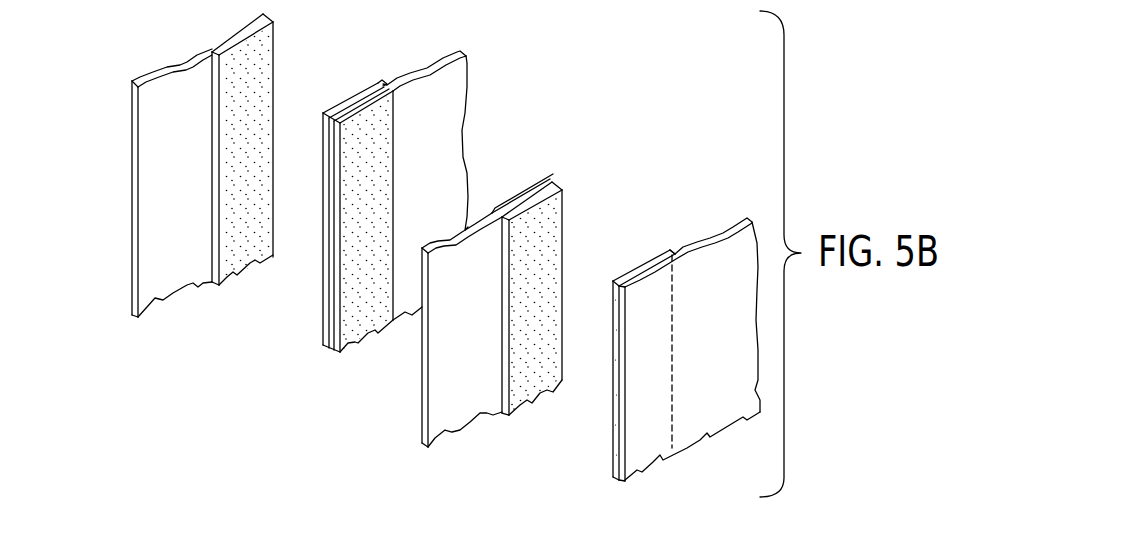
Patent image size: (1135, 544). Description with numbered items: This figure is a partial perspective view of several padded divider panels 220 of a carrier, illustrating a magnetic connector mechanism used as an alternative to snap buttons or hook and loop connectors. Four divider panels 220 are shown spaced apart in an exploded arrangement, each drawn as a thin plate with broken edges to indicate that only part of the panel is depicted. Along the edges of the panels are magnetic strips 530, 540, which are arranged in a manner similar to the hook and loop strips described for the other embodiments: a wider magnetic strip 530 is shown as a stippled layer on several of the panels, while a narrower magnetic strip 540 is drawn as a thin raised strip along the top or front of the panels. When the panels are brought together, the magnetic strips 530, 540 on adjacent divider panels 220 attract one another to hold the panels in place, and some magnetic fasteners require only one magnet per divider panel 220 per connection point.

The divider panel 220 is at (705, 193).
The magnetic strip 530 is at (262, 62).
The magnetic strip 540 is at (347, 98).